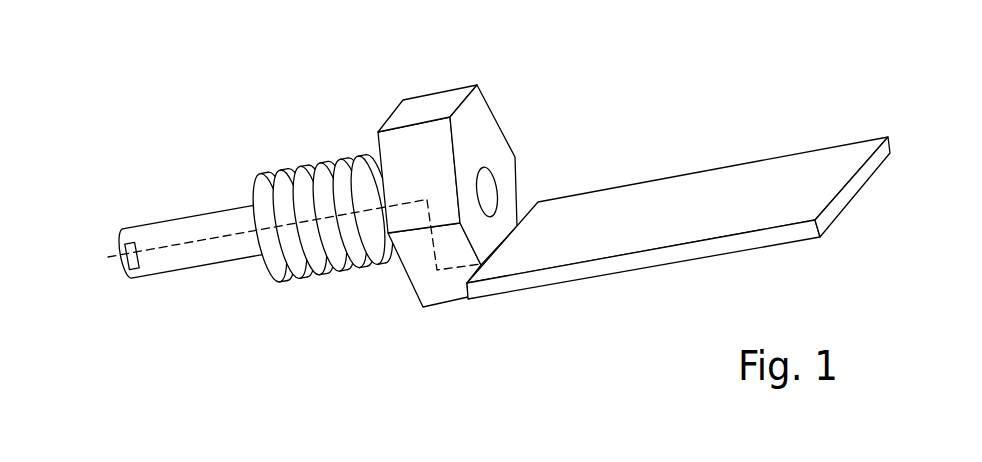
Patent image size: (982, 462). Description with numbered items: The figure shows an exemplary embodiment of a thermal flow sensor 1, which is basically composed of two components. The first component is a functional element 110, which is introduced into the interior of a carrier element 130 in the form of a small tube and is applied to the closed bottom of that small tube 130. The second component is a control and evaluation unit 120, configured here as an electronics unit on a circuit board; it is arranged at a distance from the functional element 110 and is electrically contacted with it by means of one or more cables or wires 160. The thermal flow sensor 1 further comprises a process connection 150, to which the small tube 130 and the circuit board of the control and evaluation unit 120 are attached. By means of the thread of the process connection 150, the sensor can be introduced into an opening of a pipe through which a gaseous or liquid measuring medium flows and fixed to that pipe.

The thermal flow sensor 1 is at (459, 193).
The functional element 110 is at (128, 261).
The control and evaluation unit 120 is at (678, 192).
The carrier element 130 is at (205, 261).
The process connection 150 is at (332, 175).
The cables or wires 160 is at (168, 247).